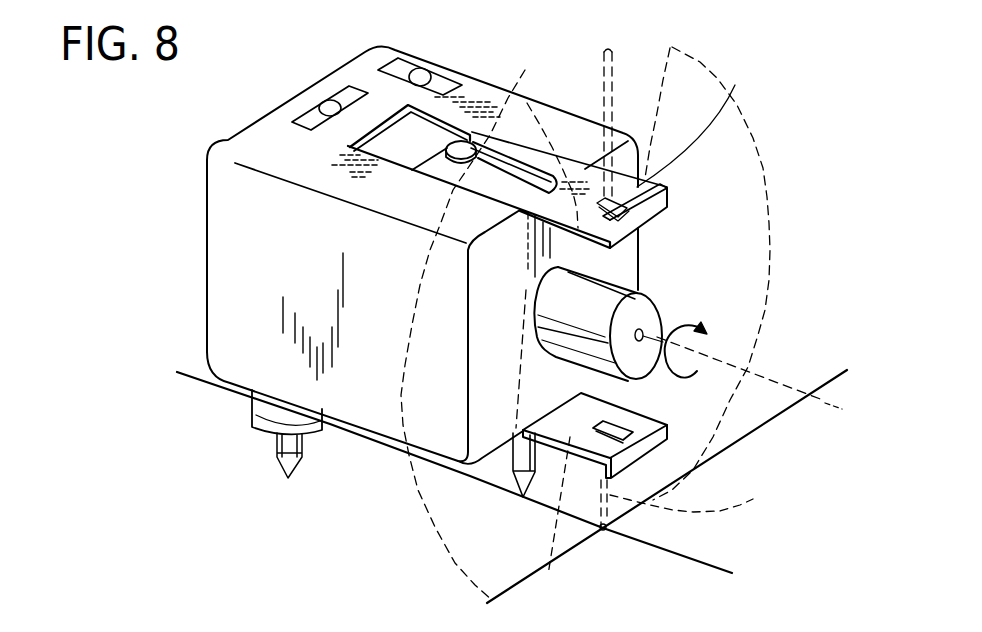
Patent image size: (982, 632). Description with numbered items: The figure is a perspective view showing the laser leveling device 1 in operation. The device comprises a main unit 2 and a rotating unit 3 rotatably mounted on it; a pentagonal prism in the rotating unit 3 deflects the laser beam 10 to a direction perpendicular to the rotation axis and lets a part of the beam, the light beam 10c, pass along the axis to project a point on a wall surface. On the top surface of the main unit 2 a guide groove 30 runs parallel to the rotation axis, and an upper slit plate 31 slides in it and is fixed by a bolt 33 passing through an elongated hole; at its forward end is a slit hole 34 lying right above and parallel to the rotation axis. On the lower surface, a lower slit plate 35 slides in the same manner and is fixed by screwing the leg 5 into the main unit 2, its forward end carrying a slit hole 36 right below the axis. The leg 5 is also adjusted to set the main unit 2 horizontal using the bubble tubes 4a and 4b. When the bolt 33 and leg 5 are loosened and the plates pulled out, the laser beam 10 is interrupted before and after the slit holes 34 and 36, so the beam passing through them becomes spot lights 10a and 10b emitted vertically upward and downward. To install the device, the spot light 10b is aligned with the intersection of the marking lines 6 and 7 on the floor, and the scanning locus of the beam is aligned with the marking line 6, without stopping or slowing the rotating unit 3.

The laser leveling device 1 is at (473, 76).
The main unit 2 is at (230, 139).
The rotating unit 3 is at (616, 283).
The bubble tube 4a is at (343, 96).
The bubble tube 4b is at (400, 68).
The leg 5 is at (548, 450).
The marking line 6 is at (836, 376).
The marking line 7 is at (607, 531).
The laser beam 10 is at (730, 183).
The spot light 10a is at (620, 78).
The spot light 10b is at (757, 499).
The light beam 10c is at (823, 403).
The guide groove 30 is at (398, 127).
The upper slit plate 31 is at (572, 176).
The bolt 33 is at (476, 138).
The slit hole 34 is at (698, 118).
The lower slit plate 35 is at (577, 443).
The slit hole 36 is at (625, 425).